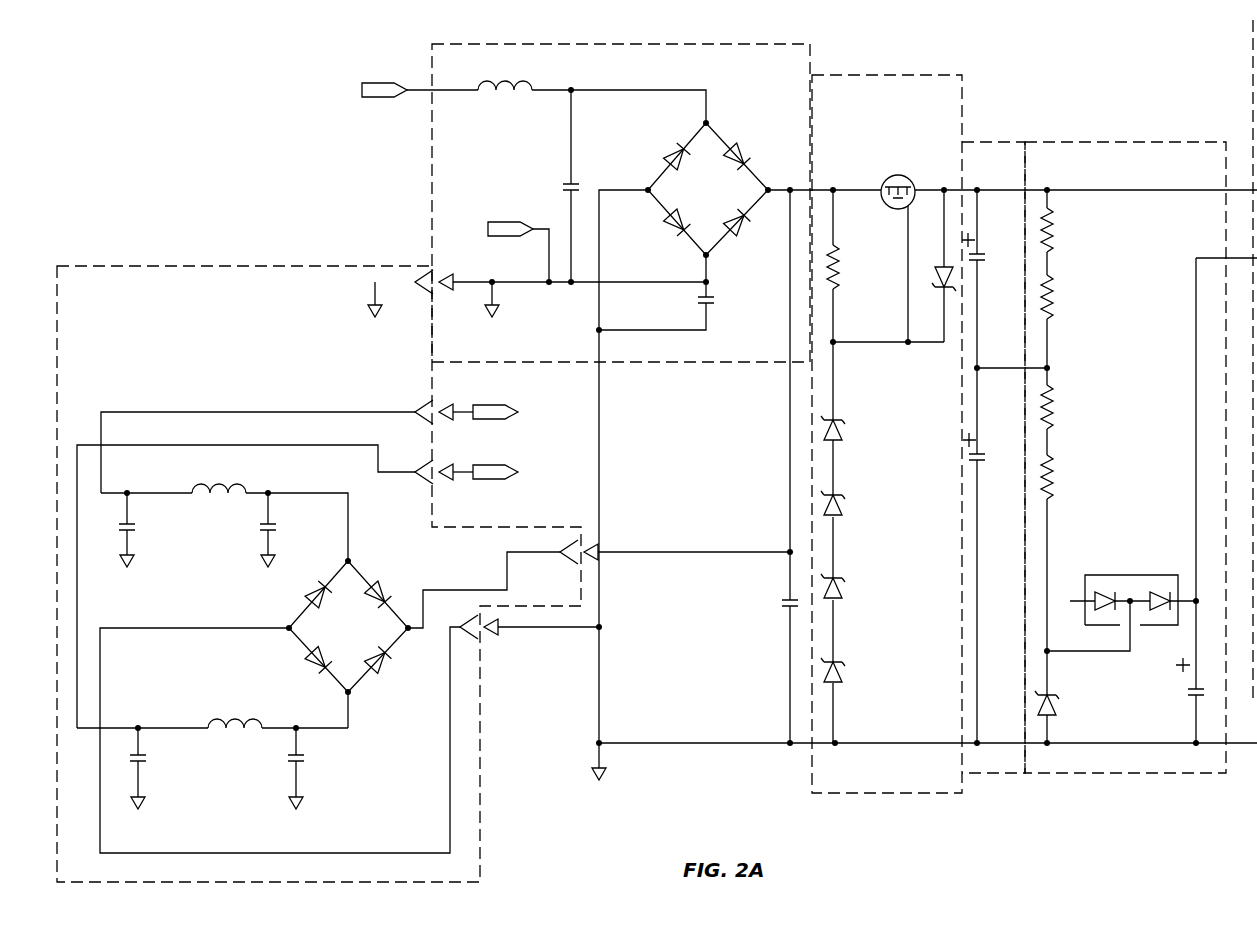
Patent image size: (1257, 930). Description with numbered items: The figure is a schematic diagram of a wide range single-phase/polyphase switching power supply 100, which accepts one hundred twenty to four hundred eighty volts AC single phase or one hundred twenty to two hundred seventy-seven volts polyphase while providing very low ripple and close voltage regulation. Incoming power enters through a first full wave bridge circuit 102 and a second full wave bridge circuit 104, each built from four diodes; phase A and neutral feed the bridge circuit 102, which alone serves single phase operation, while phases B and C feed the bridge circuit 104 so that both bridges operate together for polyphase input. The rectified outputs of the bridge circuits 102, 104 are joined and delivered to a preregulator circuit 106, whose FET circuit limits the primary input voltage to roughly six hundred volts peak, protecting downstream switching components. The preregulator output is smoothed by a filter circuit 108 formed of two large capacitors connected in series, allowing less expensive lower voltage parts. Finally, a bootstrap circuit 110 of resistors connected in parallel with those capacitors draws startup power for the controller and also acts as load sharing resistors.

The power supply 100 is at (1010, 52).
The first full wave bridge circuit 102 is at (627, 44).
The second full wave bridge circuit 104 is at (483, 876).
The preregulator circuit 106 is at (910, 795).
The filter circuit 108 is at (975, 142).
The bootstrap circuit 110 is at (1097, 142).